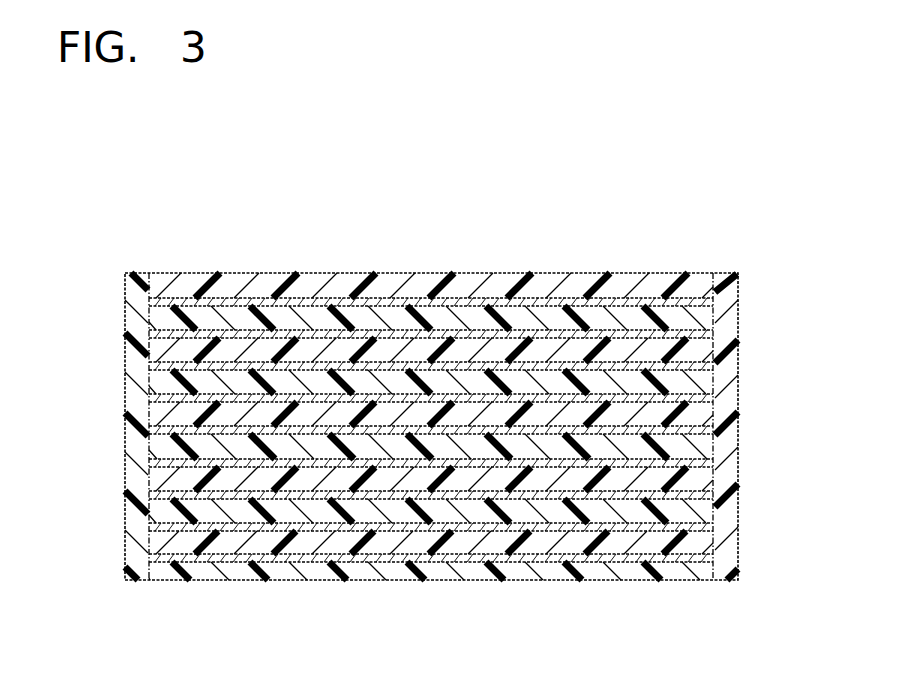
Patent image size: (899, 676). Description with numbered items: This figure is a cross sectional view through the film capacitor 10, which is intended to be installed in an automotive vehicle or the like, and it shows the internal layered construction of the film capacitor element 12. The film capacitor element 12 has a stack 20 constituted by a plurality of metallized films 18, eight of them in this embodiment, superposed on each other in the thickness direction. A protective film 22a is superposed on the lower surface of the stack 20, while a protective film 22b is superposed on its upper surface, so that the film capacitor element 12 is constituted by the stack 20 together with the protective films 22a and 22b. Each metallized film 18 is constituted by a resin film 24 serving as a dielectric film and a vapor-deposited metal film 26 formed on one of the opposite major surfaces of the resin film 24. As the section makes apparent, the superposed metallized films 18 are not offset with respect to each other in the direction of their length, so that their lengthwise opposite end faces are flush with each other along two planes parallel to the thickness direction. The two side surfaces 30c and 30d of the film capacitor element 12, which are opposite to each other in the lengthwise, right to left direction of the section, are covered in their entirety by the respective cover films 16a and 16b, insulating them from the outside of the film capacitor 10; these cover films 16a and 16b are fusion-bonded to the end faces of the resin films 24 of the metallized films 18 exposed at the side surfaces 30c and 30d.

The film capacitor 10 is at (663, 242).
The film capacitor element 12 is at (362, 264).
The cover film 16a is at (133, 297).
The cover film 16b is at (728, 370).
The metallized film 18 is at (52, 513).
The stack 20 is at (364, 430).
The protective film 22a is at (323, 572).
The protective film 22b is at (233, 287).
The resin film 24 is at (430, 403).
The vapor-deposited metal film 26 is at (431, 419).
The side surface 30c is at (148, 302).
The side surface 30d is at (718, 397).